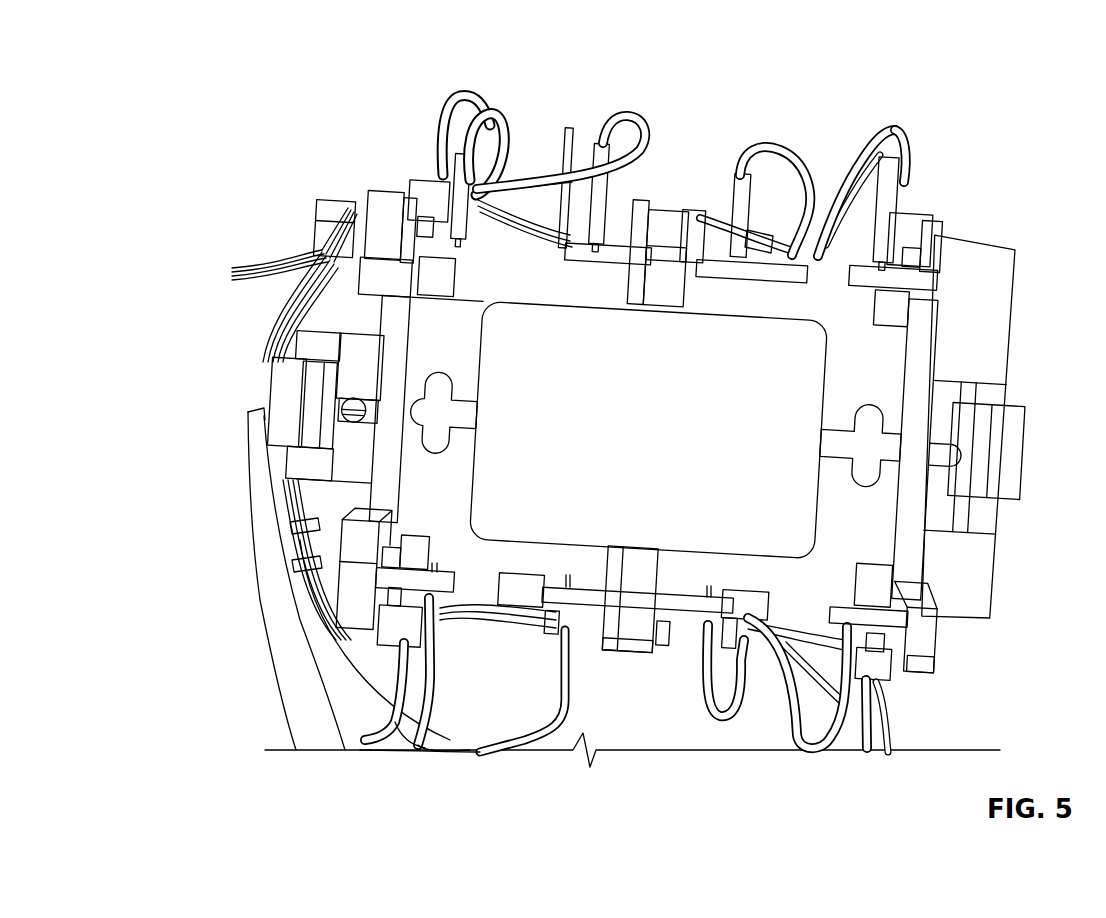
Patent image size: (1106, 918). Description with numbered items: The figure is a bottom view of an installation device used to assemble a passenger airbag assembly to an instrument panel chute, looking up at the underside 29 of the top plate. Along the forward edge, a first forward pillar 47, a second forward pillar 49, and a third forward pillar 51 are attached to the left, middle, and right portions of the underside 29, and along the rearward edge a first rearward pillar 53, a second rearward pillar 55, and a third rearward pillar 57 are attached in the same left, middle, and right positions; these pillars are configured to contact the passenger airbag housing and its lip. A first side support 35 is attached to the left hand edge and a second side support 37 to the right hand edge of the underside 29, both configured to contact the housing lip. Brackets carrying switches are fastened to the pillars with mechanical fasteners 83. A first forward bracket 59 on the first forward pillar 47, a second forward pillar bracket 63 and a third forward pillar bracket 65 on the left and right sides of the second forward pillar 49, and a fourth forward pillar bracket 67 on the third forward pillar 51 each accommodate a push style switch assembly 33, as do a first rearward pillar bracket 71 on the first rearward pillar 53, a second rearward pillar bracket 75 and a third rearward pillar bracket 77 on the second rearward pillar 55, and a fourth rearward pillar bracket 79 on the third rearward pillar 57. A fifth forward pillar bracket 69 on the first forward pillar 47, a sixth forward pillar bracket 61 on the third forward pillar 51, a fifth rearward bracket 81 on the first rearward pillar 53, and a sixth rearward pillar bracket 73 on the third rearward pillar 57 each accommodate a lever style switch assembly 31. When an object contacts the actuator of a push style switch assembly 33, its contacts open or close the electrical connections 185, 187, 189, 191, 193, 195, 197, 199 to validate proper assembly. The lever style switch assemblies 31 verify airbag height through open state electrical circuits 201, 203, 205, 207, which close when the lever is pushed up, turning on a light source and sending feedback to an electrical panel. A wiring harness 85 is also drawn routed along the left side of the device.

The underside 29 is at (315, 500).
The switch assembly 31 is at (455, 290).
The switch assembly 33 is at (568, 195).
The first side support 35 is at (292, 408).
The second side support 37 is at (985, 432).
The first forward pillar 47 is at (340, 202).
The second forward pillar 49 is at (667, 217).
The third forward pillar 51 is at (960, 243).
The first rearward pillar 53 is at (350, 595).
The second rearward pillar 55 is at (632, 632).
The third rearward pillar 57 is at (930, 628).
The first forward bracket 59 is at (380, 234).
The sixth forward pillar bracket 61 is at (428, 193).
The second forward pillar bracket 63 is at (655, 262).
The third forward pillar bracket 65 is at (692, 213).
The fourth forward pillar bracket 67 is at (935, 230).
The fifth forward pillar bracket 69 is at (918, 215).
The first rearward pillar bracket 71 is at (380, 600).
The sixth rearward pillar bracket 73 is at (438, 700).
The second rearward pillar bracket 75 is at (597, 597).
The third rearward pillar bracket 77 is at (655, 655).
The fourth rearward pillar bracket 79 is at (935, 655).
The fifth rearward bracket 81 is at (896, 676).
The mechanical fastener 83 is at (412, 228).
The wiring harness 85 is at (263, 338).
The electrical connection 185 is at (492, 115).
The electrical connection 187 is at (630, 115).
The electrical connection 189 is at (768, 150).
The electrical connection 191 is at (872, 200).
The electrical connection 193 is at (449, 738).
The electrical connection 195 is at (540, 740).
The electrical connection 197 is at (733, 700).
The electrical connection 199 is at (810, 752).
The electrical circuit 201 is at (458, 95).
The electrical circuit 203 is at (895, 140).
The electrical circuit 205 is at (425, 730).
The electrical circuit 207 is at (868, 712).